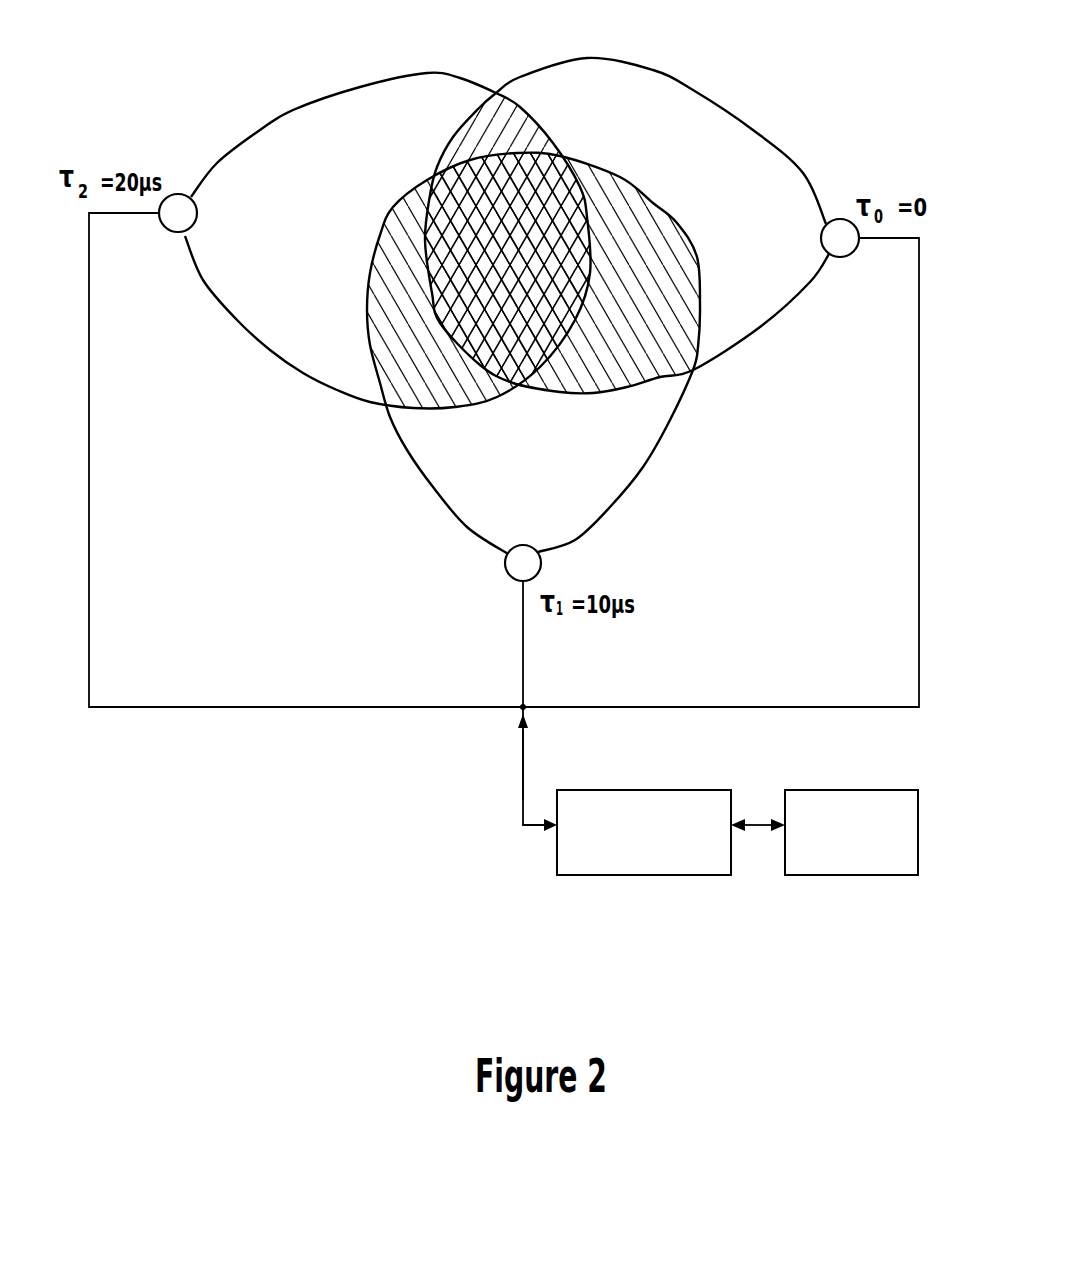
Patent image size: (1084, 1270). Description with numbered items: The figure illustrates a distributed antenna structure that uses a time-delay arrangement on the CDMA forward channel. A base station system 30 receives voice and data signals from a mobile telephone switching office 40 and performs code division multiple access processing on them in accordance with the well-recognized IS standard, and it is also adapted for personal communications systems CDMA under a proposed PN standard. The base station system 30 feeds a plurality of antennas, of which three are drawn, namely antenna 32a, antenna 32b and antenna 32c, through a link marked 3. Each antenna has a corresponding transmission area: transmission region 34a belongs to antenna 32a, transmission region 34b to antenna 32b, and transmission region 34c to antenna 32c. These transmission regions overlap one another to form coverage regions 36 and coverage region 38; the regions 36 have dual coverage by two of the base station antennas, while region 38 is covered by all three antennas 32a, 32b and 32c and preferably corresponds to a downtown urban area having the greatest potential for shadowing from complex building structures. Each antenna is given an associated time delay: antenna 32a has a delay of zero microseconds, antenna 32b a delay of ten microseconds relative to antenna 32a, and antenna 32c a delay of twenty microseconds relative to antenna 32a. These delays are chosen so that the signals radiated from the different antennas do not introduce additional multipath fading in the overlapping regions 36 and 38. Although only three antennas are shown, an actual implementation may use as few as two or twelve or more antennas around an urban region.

The communication link 3 is at (513, 768).
The base station system 30 is at (662, 872).
The antenna 32a is at (823, 213).
The antenna 32b is at (508, 562).
The antenna 32c is at (181, 236).
The transmission region 34a is at (678, 103).
The transmission region 34b is at (602, 489).
The transmission region 34c is at (292, 130).
The coverage region 36 is at (497, 117).
The coverage region 38 is at (515, 327).
The mobile telephone switching office 40 is at (865, 870).